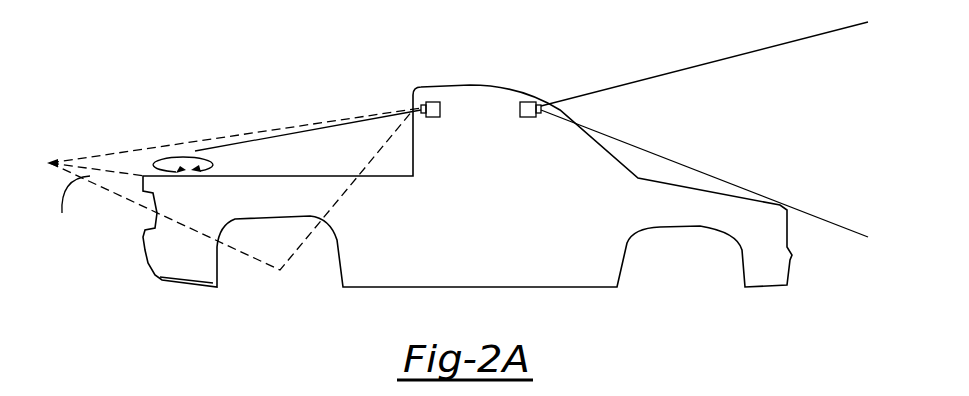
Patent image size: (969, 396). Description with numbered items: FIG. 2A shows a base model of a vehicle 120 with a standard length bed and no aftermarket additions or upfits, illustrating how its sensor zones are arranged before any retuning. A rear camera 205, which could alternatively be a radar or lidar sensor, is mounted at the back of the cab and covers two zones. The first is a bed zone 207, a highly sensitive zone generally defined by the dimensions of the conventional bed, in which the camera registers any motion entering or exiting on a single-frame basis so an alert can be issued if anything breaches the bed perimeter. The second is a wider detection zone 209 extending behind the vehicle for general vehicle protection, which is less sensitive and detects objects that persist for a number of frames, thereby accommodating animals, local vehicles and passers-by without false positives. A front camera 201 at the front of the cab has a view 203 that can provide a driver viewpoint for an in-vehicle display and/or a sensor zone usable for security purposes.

The vehicle 120 is at (492, 239).
The front camera 201 is at (529, 102).
The view 203 is at (729, 116).
The rear camera 205 is at (433, 102).
The bed zone 207 is at (376, 135).
The wider detection zone 209 is at (115, 182).